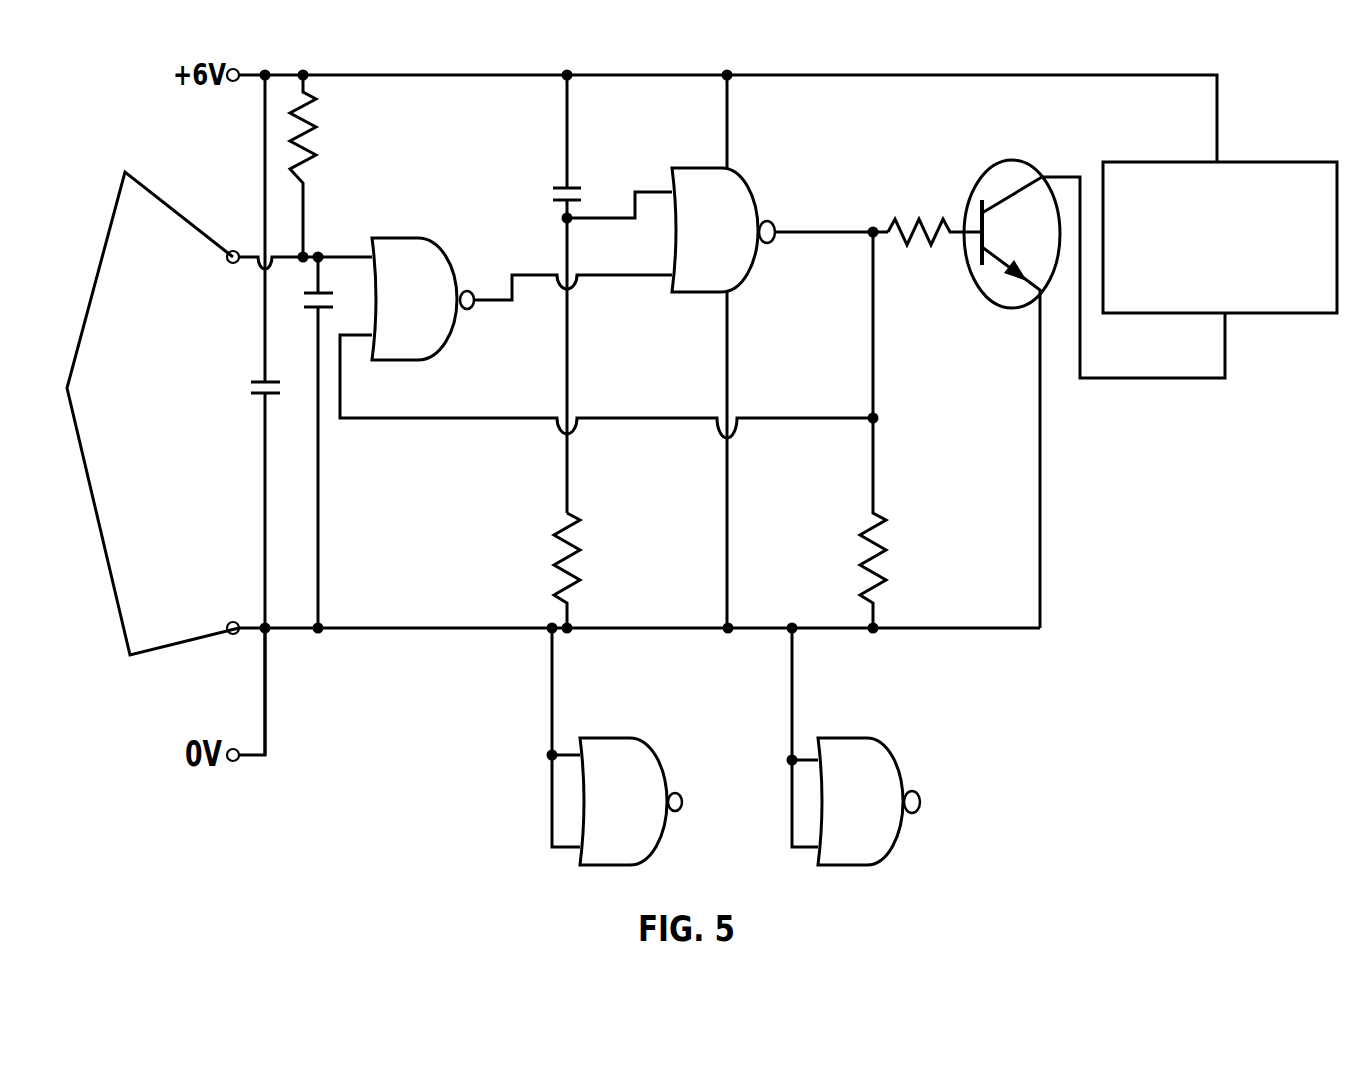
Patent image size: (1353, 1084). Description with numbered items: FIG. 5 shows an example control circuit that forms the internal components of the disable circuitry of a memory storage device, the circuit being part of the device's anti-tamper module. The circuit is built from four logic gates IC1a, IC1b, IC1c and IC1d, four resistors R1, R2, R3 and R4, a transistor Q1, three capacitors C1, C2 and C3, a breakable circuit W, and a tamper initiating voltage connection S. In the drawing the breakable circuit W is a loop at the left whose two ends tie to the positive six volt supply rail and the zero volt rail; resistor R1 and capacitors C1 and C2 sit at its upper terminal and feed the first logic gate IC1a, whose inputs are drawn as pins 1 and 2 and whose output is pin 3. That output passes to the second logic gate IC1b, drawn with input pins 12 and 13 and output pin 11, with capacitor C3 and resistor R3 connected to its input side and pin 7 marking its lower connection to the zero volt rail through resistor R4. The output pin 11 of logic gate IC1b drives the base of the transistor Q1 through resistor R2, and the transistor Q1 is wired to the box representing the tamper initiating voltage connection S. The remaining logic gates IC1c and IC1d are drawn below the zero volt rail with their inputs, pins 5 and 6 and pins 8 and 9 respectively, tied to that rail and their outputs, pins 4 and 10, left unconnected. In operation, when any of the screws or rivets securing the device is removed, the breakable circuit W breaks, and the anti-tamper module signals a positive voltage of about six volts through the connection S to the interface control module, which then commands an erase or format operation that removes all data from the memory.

The breakable circuit W is at (219, 413).
The resistor R1 is at (335, 166).
The resistor R2 is at (935, 203).
The resistor R3 is at (545, 570).
The resistor R4 is at (849, 430).
The capacitor C1 is at (254, 415).
The capacitor C2 is at (304, 442).
The capacitor C3 is at (594, 294).
The logic gate IC1a is at (606, 338).
The logic gate IC1b is at (780, 351).
The logic gate IC1c is at (617, 746).
The logic gate IC1d is at (856, 746).
The transistor Q1 is at (1094, 394).
The tamper initiating voltage connection S is at (1220, 237).
The pin 1 of IC1a 1 is at (362, 268).
The pin 2 of IC1a 2 is at (362, 324).
The pin 3 of IC1a 3 is at (468, 265).
The pin 4 of IC1c 4 is at (695, 803).
The pin 5 of IC1c 5 is at (570, 775).
The pin 6 of IC1c 6 is at (570, 831).
The pin 7 ground 7 is at (717, 318).
The pin 8 of IC1d 8 is at (807, 775).
The pin 9 of IC1d 9 is at (807, 831).
The pin 10 of IC1d 10 is at (934, 803).
The pin 11 of IC1b 11 is at (767, 204).
The pin 12 of IC1b 12 is at (657, 259).
The pin 13 of IC1b 13 is at (657, 208).